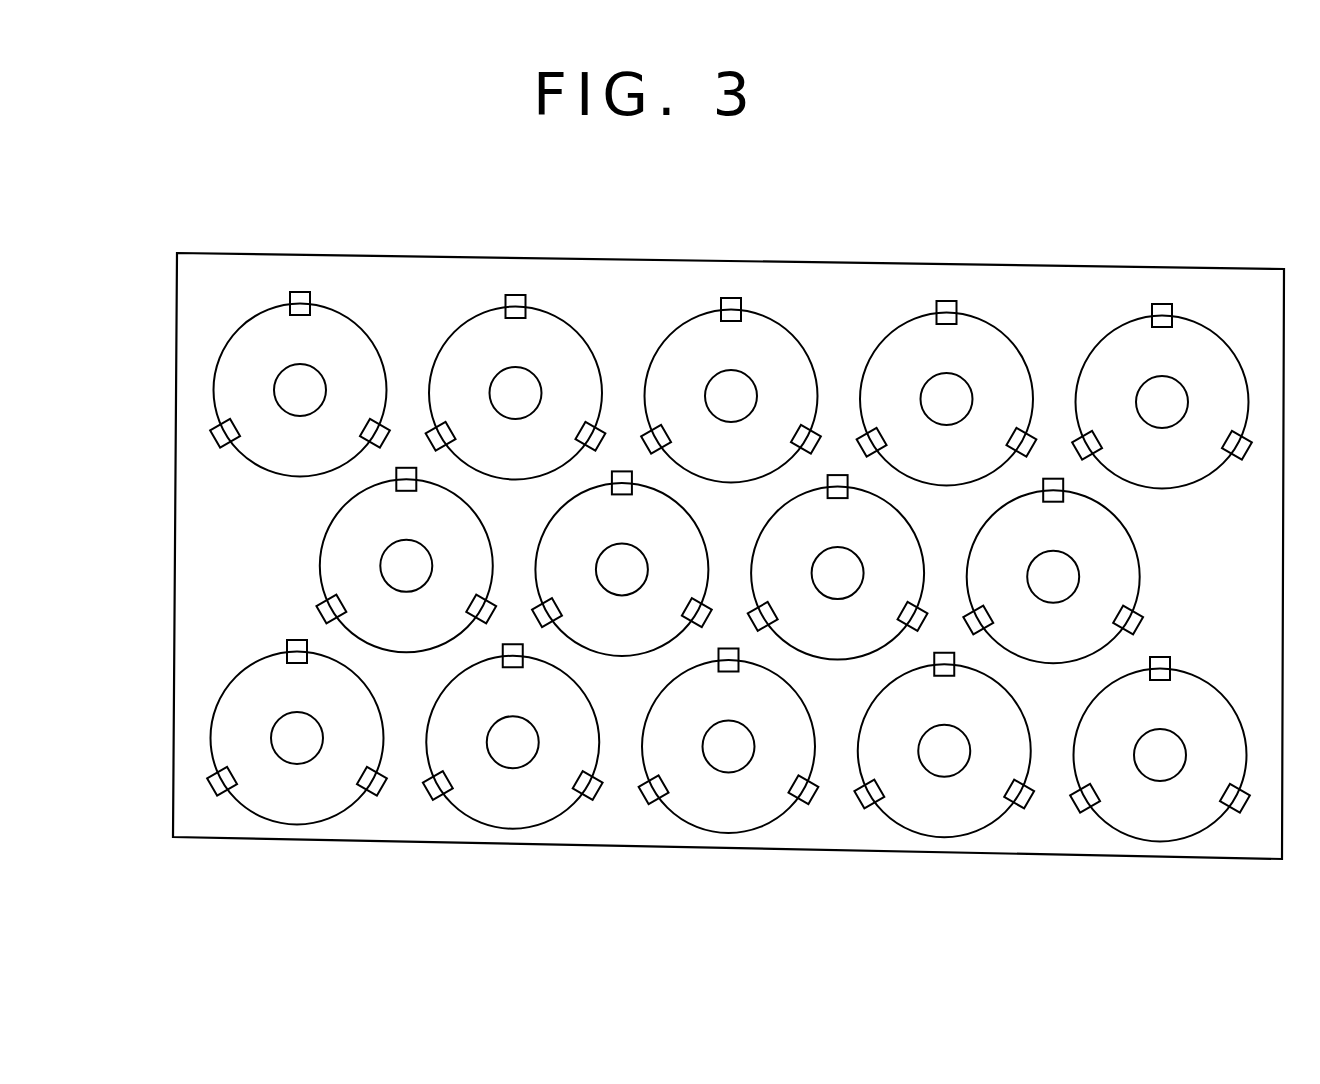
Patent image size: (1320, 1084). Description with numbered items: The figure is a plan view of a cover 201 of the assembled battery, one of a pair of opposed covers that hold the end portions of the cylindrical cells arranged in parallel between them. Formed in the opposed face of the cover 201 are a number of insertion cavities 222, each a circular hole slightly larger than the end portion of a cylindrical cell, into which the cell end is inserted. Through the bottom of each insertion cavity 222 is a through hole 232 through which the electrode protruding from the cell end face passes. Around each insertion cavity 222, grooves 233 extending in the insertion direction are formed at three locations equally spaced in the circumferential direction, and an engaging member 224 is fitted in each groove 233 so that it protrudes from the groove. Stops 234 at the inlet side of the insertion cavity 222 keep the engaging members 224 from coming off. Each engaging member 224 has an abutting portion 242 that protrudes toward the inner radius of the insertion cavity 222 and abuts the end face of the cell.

The cover 201 is at (1066, 275).
The insertion cavity 222 is at (364, 330).
The engaging member 224 is at (311, 307).
The through hole 232 is at (287, 400).
The groove 233 is at (288, 308).
The stop 234 is at (308, 296).
The abutting portion 242 is at (298, 316).